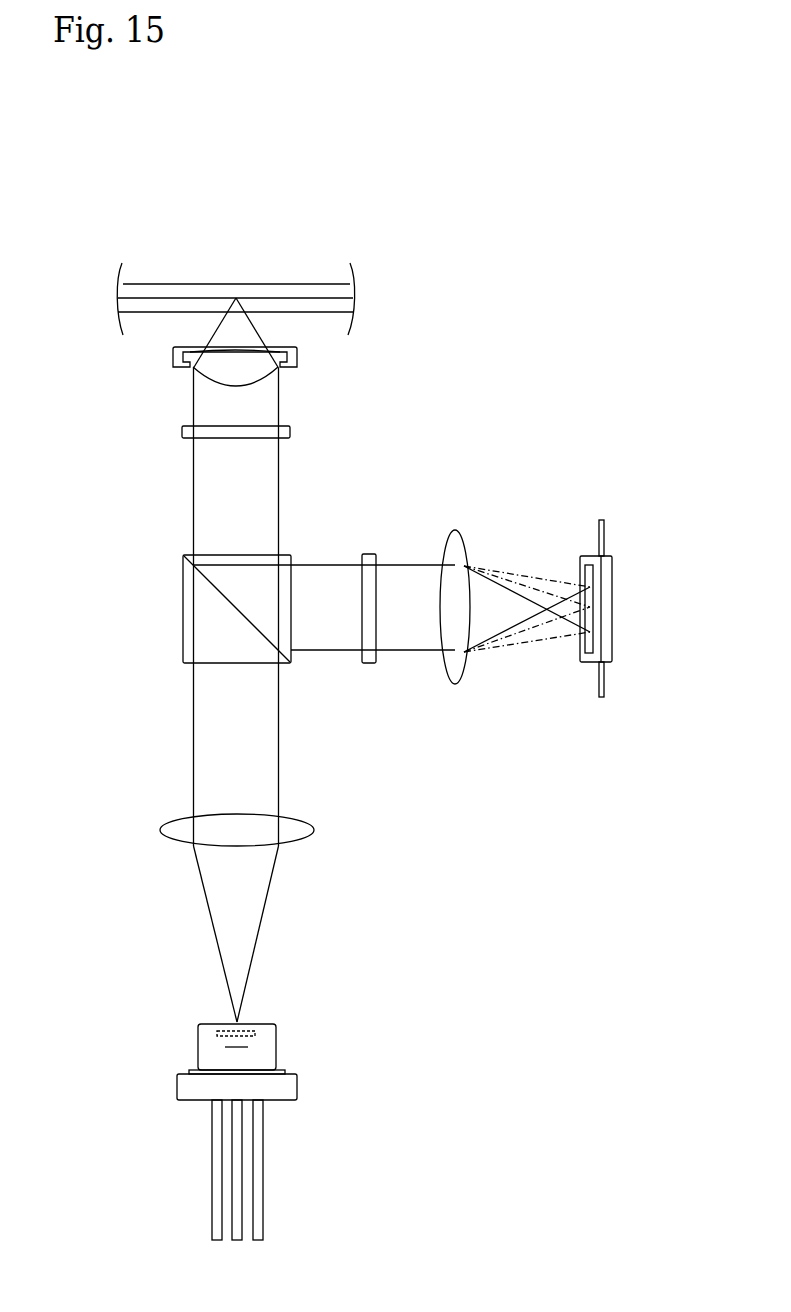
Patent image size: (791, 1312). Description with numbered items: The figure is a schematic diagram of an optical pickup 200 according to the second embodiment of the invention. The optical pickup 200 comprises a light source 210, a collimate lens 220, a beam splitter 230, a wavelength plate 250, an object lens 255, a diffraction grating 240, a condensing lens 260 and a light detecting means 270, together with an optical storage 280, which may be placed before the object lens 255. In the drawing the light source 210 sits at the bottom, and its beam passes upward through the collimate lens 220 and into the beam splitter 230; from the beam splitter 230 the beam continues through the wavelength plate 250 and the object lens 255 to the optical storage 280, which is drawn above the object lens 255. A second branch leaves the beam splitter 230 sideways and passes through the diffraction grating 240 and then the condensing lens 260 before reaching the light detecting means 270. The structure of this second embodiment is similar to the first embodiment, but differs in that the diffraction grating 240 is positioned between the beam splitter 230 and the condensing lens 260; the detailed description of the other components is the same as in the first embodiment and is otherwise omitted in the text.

The optical pickup 200 is at (384, 208).
The light source 210 is at (276, 1045).
The collimate lens 220 is at (315, 830).
The beam splitter 230 is at (183, 608).
The diffraction grating 240 is at (369, 554).
The wavelength plate 250 is at (291, 432).
The object lens 255 is at (297, 357).
The condensing lens 260 is at (453, 530).
The light detecting means 270 is at (612, 607).
The optical storage 280 is at (298, 283).